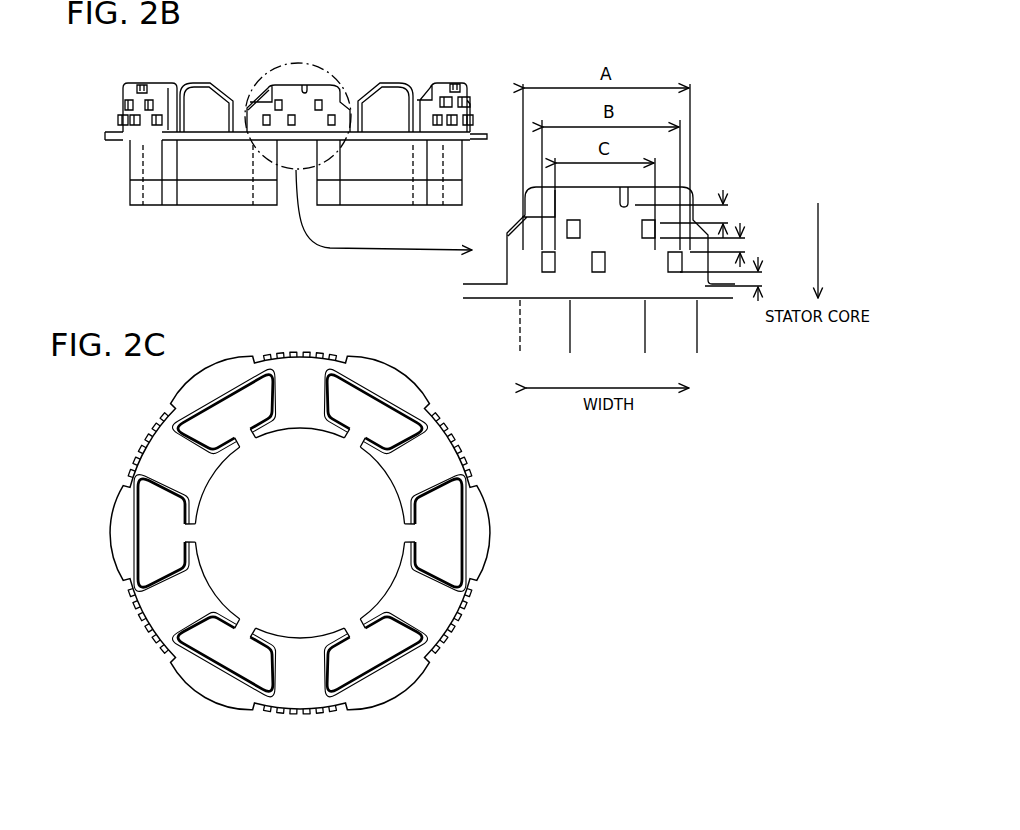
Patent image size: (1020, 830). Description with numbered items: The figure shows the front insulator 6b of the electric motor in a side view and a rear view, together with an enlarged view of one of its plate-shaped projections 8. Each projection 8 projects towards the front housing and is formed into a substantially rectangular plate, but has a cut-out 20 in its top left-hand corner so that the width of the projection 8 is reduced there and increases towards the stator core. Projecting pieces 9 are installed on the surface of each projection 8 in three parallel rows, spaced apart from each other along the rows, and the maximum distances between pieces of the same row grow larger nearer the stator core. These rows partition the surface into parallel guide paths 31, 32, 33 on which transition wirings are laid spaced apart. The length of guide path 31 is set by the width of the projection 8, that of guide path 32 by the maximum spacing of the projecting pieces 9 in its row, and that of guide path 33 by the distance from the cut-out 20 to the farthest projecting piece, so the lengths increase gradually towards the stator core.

In FIG. 2B, the front insulator 6b is at (130, 216).
In FIG. 2C, the front insulator 6b is at (158, 680).
In FIG. 2B, the projection 8 is at (168, 86).
In FIG. 2B, the projecting pieces 9 is at (141, 86).
In FIG. 2B, the cut-out 20 is at (419, 89).
In FIG. 2B, the guide path 31 is at (761, 280).
In FIG. 2B, the guide path 32 is at (743, 246).
In FIG. 2B, the guide path 33 is at (726, 214).